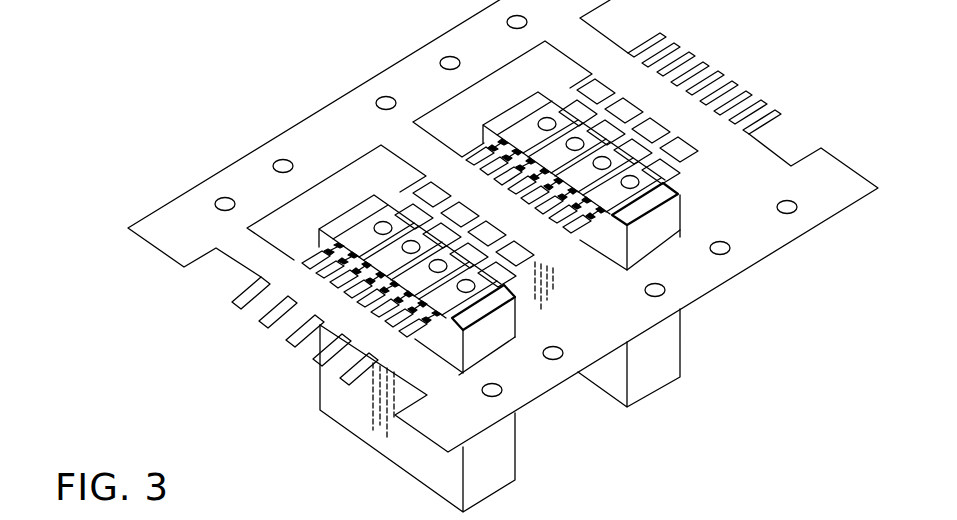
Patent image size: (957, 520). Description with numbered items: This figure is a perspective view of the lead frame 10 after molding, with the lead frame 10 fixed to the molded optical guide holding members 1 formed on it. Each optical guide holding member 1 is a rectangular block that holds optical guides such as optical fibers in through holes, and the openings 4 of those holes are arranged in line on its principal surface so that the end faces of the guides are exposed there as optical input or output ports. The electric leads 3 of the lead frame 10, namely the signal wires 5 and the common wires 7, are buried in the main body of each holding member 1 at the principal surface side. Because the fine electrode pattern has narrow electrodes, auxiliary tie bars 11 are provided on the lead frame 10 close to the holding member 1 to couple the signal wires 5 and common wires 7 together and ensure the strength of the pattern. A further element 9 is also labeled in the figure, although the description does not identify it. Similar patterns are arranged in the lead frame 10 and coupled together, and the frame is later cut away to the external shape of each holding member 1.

The optical guide holding member 1 is at (637, 377).
The electric leads 3 is at (413, 188).
The openings 4 is at (380, 226).
The signal wires 5 is at (343, 238).
The common wires 7 is at (327, 225).
The lead frame portion 9 is at (682, 515).
The lead frame 10 is at (841, 177).
The auxiliary tie bars 11 is at (432, 315).